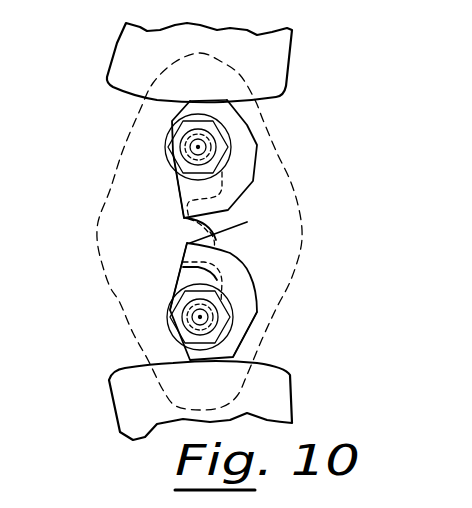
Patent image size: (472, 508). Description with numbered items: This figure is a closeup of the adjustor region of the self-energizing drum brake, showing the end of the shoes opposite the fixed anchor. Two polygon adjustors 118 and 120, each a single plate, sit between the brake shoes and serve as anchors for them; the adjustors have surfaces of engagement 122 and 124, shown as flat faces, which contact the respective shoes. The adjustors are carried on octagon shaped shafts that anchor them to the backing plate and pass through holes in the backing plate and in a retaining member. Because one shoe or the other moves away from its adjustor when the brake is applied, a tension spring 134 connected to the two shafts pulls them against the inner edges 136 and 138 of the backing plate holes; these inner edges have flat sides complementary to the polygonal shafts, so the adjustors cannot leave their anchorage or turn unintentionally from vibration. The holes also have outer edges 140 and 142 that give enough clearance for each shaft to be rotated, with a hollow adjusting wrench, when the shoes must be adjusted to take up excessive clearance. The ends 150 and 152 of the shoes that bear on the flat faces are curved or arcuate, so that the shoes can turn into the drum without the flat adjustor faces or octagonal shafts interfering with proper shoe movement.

The polygon adjustor 118 is at (247, 158).
The polygon adjustor 120 is at (250, 300).
The surface of engagement 122 is at (245, 102).
The surface of engagement 124 is at (256, 327).
The tension spring 134 is at (247, 222).
The inner edge 136 is at (175, 163).
The inner edge 138 is at (172, 290).
The outer edge 140 is at (172, 120).
The outer edge 142 is at (173, 337).
The end of shoe 150 is at (228, 100).
The end of shoe 152 is at (290, 374).